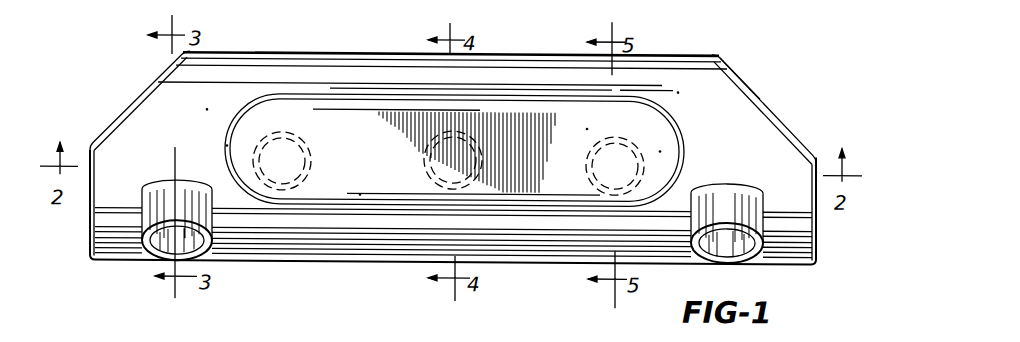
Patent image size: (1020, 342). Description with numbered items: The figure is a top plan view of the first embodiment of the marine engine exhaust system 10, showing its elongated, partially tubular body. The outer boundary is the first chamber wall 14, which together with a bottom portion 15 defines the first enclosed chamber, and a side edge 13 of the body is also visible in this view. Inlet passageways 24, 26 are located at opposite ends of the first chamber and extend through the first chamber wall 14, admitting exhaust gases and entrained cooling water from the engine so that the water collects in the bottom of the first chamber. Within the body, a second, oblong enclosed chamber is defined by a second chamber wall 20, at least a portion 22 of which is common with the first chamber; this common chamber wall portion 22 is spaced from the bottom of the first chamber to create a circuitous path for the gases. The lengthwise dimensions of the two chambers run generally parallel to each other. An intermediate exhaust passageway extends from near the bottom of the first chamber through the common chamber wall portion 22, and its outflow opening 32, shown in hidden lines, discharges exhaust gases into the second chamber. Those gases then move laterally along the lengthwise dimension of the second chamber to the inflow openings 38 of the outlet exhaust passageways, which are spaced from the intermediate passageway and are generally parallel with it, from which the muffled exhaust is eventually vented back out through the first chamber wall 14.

The marine engine exhaust system 10 is at (806, 57).
The left slanted side edge 13 is at (113, 125).
The first chamber wall 14 is at (228, 64).
The bottom portion 15 is at (748, 82).
The second chamber wall 20 is at (304, 106).
The common chamber wall portion 22 is at (543, 112).
The inlet passageway 24 is at (754, 191).
The inlet passageway 26 is at (157, 189).
The outflow opening 32 is at (497, 126).
The inflow opening 38 is at (306, 140).